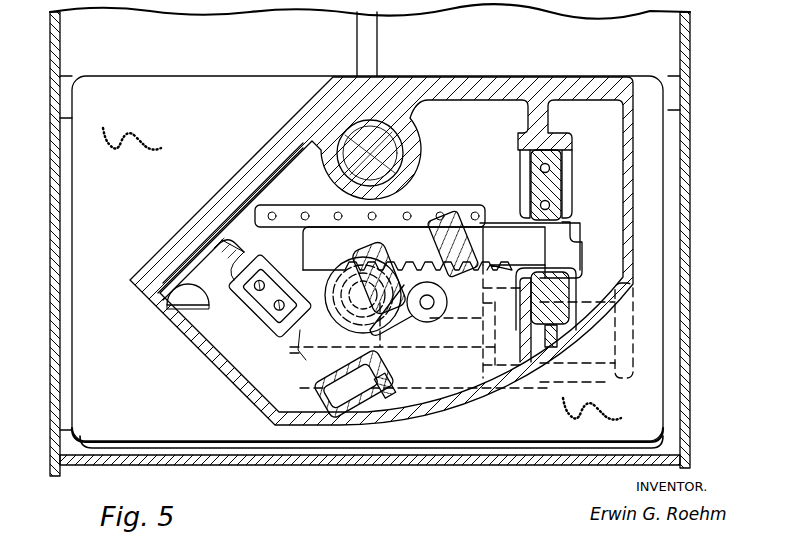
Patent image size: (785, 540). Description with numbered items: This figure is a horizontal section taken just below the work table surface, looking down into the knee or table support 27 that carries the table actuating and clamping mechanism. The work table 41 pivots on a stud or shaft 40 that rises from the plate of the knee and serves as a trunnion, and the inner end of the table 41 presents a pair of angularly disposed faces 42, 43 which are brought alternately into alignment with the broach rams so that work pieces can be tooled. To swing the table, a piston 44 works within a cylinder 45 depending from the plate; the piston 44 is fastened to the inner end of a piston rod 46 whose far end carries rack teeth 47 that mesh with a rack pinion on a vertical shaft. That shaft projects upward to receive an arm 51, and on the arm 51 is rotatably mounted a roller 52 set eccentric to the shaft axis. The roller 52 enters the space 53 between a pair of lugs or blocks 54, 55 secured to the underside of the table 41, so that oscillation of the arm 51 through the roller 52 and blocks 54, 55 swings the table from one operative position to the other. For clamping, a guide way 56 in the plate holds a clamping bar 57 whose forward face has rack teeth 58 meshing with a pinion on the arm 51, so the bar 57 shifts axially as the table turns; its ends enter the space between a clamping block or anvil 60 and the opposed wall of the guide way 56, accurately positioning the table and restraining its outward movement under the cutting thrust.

The knee or table support 27 is at (50, 365).
The stud or shaft 40 is at (385, 150).
The table 41 is at (242, 198).
The angularly disposed face 42 is at (282, 141).
The angularly disposed face 43 is at (529, 74).
The piston 44 is at (505, 384).
The cylinder 45 is at (602, 374).
The piston rod 46 is at (449, 338).
The rack teeth 47 is at (318, 333).
The arm 51 is at (430, 228).
The roller 52 is at (452, 300).
The space 53 is at (398, 242).
The lug or block 54 is at (363, 248).
The lug or block 55 is at (456, 210).
The guide way 56 is at (572, 250).
The clamping bar 57 is at (533, 238).
The rack teeth 58 is at (484, 232).
The clamping block or anvil 60 is at (556, 180).